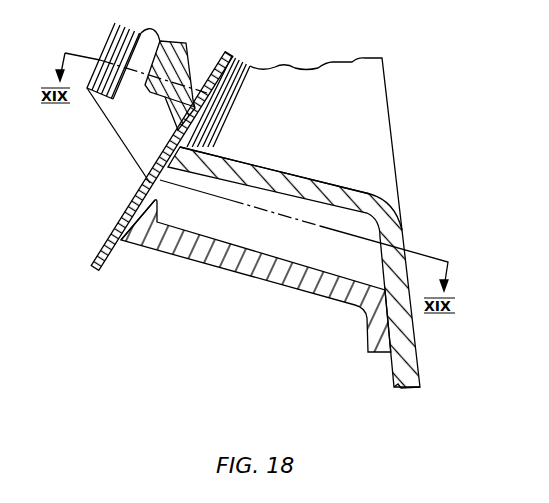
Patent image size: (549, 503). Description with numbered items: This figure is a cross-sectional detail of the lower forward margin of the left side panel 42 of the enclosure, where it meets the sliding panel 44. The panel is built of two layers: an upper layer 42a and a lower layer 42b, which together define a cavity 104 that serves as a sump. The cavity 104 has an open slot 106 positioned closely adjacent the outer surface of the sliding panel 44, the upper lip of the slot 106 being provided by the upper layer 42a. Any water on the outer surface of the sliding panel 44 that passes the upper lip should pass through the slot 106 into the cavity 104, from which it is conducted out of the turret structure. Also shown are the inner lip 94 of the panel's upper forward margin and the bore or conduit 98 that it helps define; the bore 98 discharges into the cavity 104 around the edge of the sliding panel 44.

The left side panel 42 is at (279, 223).
The upper layer 42a is at (275, 167).
The lower layer 42b is at (240, 275).
The sliding panel 44 is at (119, 229).
The inner lip 94 is at (162, 40).
The bore or conduit 98 is at (198, 67).
The cavity 104 is at (325, 258).
The open slot 106 is at (158, 196).